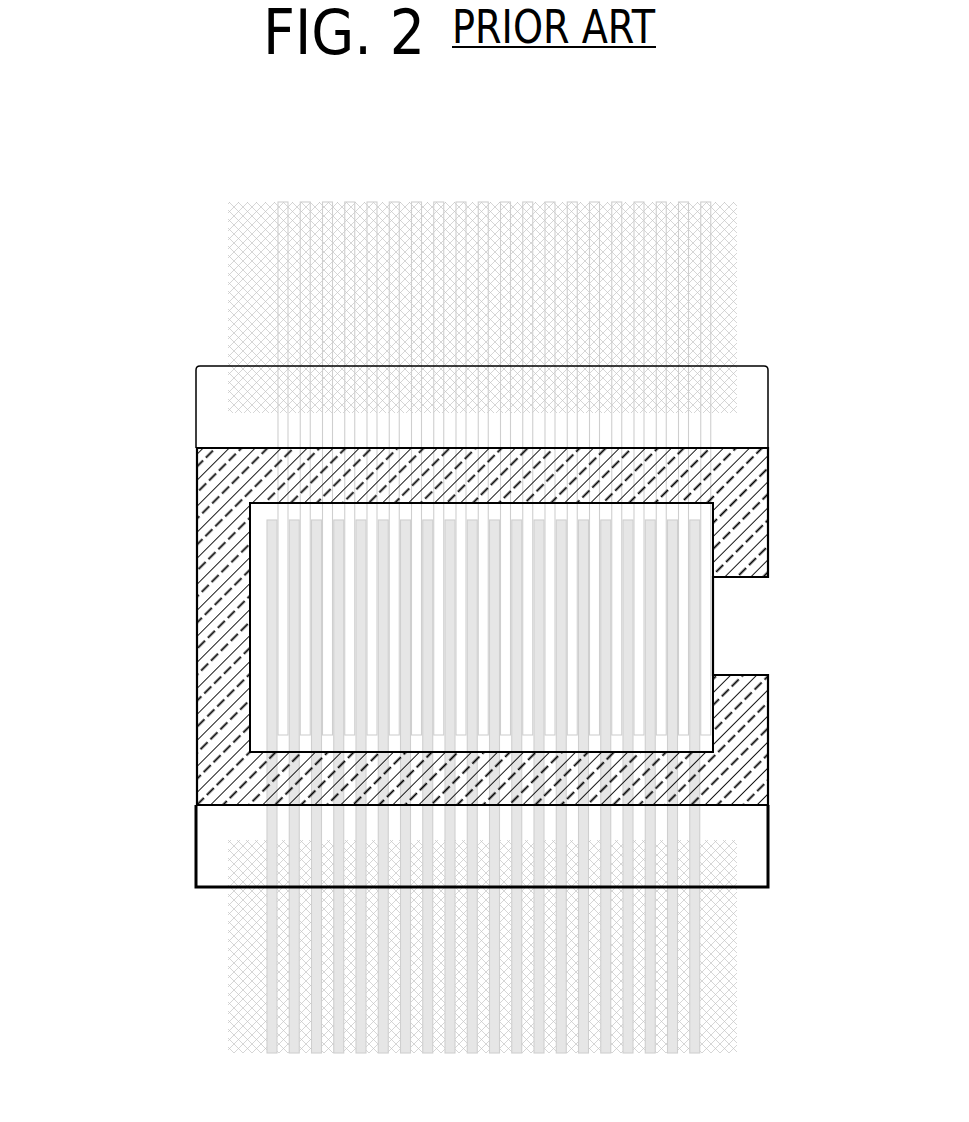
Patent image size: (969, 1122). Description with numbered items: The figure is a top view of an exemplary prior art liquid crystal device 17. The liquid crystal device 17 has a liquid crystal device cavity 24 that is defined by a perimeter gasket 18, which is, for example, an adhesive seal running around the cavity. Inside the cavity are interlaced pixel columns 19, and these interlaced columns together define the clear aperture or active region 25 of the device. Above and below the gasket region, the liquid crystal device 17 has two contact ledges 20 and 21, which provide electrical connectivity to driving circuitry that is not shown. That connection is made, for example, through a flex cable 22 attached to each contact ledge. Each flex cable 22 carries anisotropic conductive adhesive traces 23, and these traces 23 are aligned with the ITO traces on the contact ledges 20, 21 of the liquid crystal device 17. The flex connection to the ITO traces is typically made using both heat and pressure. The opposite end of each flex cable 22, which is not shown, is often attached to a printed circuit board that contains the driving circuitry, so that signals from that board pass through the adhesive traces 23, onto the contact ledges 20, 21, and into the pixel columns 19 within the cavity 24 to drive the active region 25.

The liquid crystal device 17 is at (688, 106).
The perimeter gasket 18 is at (742, 500).
The interlaced pixel columns 19 is at (268, 521).
The contact ledge 20 is at (768, 852).
The contact ledge 21 is at (768, 413).
The flex cable 22 is at (230, 305).
The anisotropic conductive adhesive traces 23 is at (283, 227).
The liquid crystal device cavity 24 is at (715, 625).
The clear aperture or active region 25 is at (276, 626).